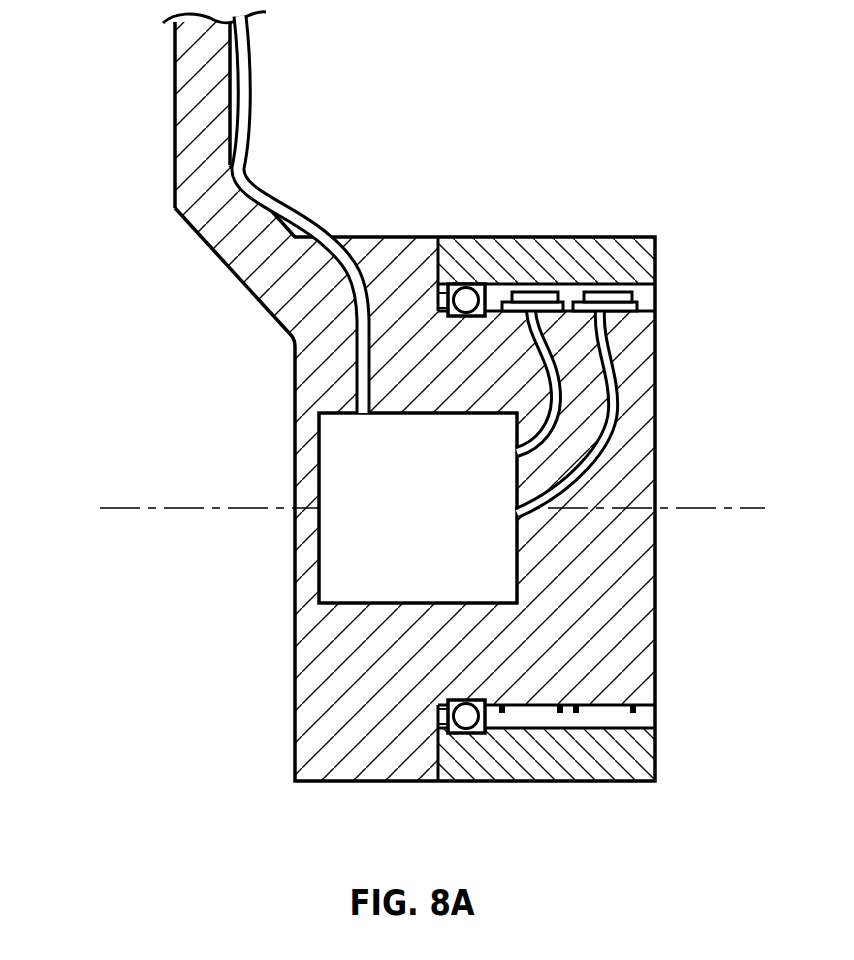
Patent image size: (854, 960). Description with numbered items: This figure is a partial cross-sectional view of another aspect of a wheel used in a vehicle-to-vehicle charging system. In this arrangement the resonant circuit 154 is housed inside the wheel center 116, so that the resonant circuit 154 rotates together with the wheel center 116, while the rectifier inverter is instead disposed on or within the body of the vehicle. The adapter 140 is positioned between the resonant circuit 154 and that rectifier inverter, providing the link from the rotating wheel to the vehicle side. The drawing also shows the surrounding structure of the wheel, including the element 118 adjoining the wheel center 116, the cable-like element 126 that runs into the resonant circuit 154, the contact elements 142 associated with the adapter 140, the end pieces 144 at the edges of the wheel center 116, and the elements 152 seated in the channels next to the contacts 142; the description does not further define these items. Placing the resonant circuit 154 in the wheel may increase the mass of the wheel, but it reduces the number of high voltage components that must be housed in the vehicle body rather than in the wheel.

The wheel center 116 is at (650, 343).
The housing wall 118 is at (192, 72).
The cable 126 is at (240, 98).
The adapter 140 is at (510, 305).
The contact 142 is at (537, 298).
The end cap 144 is at (655, 258).
The seal 152 is at (463, 297).
The resonant circuit 154 is at (320, 444).